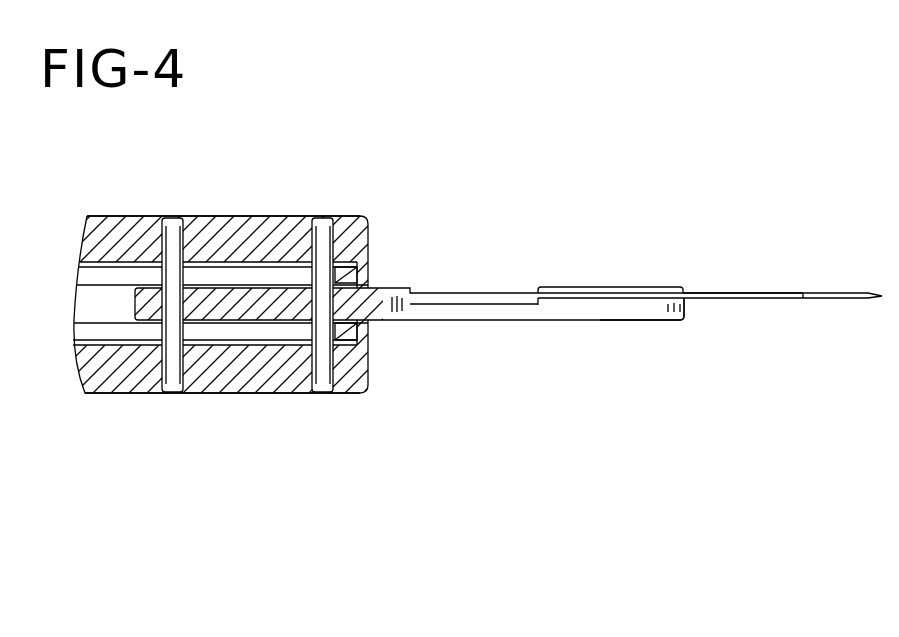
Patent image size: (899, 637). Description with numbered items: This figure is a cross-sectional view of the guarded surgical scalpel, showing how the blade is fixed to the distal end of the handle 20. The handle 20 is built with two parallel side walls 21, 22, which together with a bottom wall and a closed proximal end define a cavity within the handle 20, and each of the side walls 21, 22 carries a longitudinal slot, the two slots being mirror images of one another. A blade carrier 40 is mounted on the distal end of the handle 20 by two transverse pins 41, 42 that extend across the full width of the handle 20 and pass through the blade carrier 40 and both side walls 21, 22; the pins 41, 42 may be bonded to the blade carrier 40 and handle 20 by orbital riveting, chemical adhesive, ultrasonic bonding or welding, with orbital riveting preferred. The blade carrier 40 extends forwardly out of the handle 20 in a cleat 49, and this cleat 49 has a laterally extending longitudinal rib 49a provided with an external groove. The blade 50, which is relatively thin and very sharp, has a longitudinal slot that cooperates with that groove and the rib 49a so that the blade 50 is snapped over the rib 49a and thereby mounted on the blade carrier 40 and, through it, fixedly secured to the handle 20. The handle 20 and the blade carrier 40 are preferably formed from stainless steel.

The handle 20 is at (143, 395).
The side wall 21 is at (262, 395).
The side wall 22 is at (222, 215).
The blade carrier 40 is at (500, 320).
The transverse pin 41 is at (177, 216).
The transverse pin 42 is at (325, 215).
The cleat 49 is at (627, 307).
The longitudinal rib 49a is at (625, 287).
The blade 50 is at (823, 293).